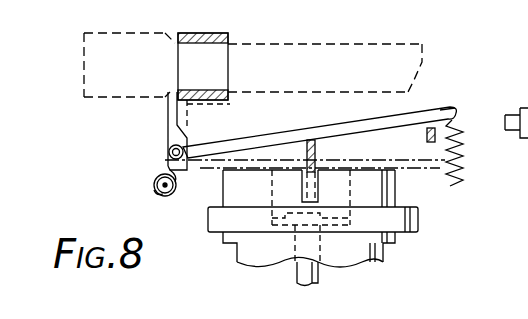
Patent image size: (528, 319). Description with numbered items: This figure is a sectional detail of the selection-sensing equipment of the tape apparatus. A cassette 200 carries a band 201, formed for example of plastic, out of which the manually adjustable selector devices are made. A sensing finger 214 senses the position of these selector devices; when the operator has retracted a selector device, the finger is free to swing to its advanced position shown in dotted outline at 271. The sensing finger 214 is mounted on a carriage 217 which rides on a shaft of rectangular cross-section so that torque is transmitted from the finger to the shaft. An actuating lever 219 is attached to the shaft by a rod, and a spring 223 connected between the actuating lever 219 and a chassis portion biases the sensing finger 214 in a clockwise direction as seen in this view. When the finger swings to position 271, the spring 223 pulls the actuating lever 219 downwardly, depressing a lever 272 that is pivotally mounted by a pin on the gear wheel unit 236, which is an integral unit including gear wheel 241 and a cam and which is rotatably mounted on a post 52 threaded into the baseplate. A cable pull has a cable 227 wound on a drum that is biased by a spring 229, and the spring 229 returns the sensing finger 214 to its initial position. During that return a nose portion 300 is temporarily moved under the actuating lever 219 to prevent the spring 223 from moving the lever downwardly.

The cassette 200 is at (327, 44).
The band 201 is at (228, 35).
The sensing finger 214 is at (167, 110).
The advanced position of the sensing finger 271 is at (230, 104).
The carriage 217 is at (169, 141).
The cable 227 is at (158, 178).
The spring 229 is at (158, 193).
The actuating lever 219 is at (396, 122).
The lever 272 is at (318, 149).
The spring 223 is at (460, 150).
The nose portion 300 is at (415, 108).
The gear wheel unit 236 is at (422, 207).
The gear wheel 241 is at (419, 226).
The post 52 is at (320, 275).